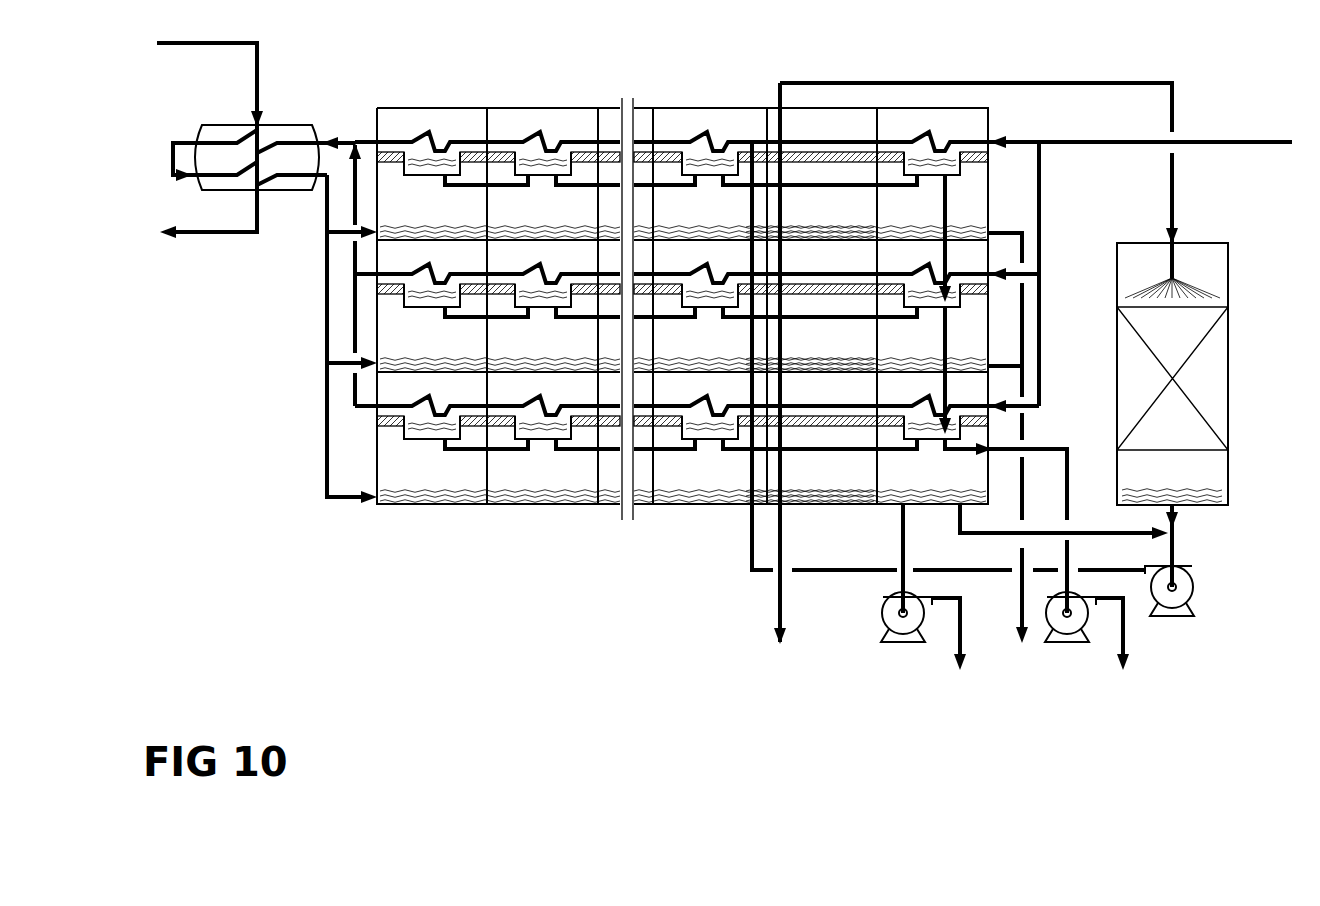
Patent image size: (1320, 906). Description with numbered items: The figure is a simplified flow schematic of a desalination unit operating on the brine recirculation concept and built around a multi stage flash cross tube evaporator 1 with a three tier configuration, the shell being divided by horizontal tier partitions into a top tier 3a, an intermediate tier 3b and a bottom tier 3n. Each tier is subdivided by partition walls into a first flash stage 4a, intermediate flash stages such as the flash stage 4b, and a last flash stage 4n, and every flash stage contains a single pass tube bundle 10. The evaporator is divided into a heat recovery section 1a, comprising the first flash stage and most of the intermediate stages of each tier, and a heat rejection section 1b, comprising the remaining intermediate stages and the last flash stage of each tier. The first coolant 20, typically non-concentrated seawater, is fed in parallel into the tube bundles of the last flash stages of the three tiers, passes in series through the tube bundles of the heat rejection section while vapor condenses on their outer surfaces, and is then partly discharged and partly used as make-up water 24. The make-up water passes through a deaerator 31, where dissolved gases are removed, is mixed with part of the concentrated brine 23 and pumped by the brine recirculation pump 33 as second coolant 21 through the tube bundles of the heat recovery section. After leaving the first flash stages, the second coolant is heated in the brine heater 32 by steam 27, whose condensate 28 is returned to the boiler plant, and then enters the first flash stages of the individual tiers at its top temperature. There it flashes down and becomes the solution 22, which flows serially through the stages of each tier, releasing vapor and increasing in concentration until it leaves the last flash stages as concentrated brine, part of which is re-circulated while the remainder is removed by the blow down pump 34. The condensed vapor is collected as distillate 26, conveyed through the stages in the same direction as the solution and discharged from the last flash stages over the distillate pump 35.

The evaporator 1 is at (415, 108).
The heat recovery section 1a is at (675, 108).
The heat rejection section 1b is at (810, 108).
The top tier 3a is at (372, 108).
The intermediate tier 3b is at (372, 312).
The bottom tier 3n is at (375, 467).
The first flash stage 4a is at (432, 215).
The intermediate flash stage 4b is at (559, 217).
The last flash stage 4n is at (945, 215).
The tube bundles 10 is at (542, 133).
The first coolant 20 is at (775, 610).
The second coolant 21 is at (750, 568).
The solution 22 is at (568, 492).
The concentrated brine 23 is at (1085, 530).
The make-up water 24 is at (838, 83).
The distillate 26 is at (1122, 650).
The steam 27 is at (208, 48).
The condensate 28 is at (198, 238).
The deaerator 31 is at (1200, 243).
The brine heater 32 is at (288, 122).
The brine recirculation pump 33 is at (1197, 575).
The blow down pump 34 is at (880, 625).
The distillate pump 35 is at (1062, 640).